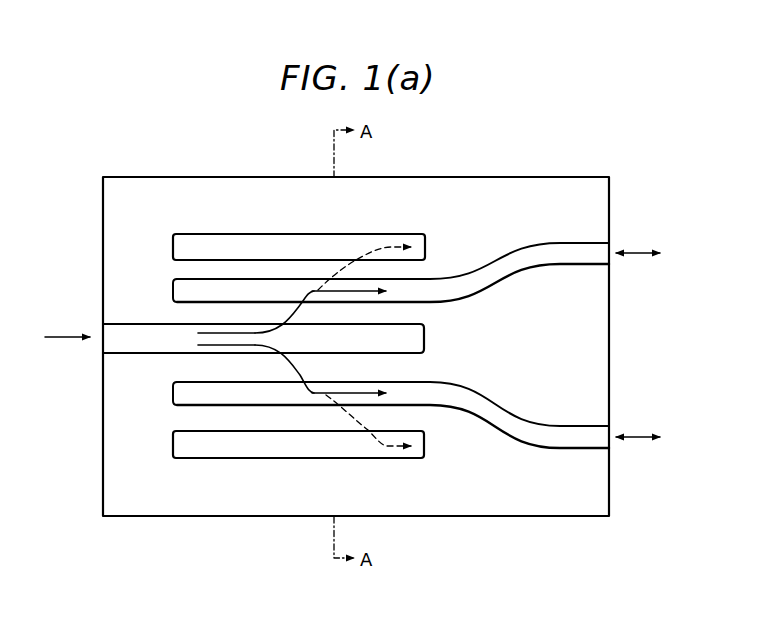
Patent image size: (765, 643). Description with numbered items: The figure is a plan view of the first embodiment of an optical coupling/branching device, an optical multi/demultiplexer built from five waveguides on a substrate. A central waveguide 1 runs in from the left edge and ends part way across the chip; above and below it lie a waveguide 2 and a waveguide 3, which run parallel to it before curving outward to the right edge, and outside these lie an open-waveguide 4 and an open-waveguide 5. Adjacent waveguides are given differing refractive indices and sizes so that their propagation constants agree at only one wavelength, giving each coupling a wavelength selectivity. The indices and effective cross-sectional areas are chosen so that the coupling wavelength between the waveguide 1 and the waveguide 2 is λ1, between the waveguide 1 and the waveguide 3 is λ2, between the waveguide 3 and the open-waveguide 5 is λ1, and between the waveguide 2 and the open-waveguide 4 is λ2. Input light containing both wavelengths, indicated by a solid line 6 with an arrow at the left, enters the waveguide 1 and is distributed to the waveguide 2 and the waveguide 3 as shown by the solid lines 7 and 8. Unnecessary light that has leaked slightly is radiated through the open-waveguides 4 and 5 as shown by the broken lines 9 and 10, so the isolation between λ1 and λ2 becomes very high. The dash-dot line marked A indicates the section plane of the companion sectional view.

The waveguide 1 is at (425, 334).
The waveguide 2 is at (503, 266).
The waveguide 3 is at (531, 413).
The open-waveguide 4 is at (416, 234).
The open-waveguide 5 is at (413, 459).
The input light 6 is at (70, 339).
The solid line 7 is at (305, 290).
The solid line 8 is at (303, 383).
The broken line 9 is at (392, 247).
The broken line 10 is at (382, 447).